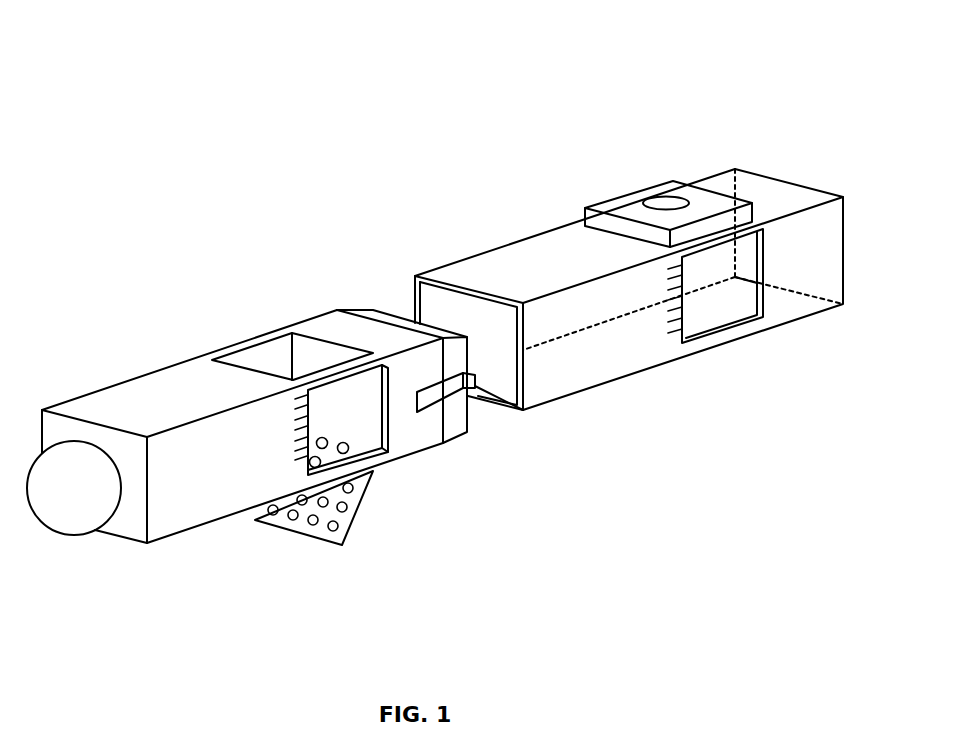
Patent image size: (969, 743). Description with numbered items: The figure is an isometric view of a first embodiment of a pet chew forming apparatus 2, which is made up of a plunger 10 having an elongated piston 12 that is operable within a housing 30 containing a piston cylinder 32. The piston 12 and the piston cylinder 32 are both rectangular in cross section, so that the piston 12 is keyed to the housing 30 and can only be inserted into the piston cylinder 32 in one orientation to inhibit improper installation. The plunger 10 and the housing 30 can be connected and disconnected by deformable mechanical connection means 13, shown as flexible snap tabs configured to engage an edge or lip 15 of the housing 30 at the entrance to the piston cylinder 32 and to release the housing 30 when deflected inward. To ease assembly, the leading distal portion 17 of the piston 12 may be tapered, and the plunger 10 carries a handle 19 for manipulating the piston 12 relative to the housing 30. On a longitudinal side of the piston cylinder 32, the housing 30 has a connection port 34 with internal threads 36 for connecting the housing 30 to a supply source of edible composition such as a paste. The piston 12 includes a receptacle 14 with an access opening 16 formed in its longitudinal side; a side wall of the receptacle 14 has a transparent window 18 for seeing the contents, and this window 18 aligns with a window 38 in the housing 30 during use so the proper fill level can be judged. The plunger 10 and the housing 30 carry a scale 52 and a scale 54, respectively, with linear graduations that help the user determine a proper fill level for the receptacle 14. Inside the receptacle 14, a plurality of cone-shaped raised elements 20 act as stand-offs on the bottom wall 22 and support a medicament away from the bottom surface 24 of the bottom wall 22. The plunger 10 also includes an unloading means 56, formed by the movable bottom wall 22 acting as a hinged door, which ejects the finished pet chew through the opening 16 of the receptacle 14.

The pet chew forming apparatus 2 is at (340, 117).
The plunger 10 is at (128, 288).
The piston 12 is at (128, 378).
The deformable mechanical connection means 13 is at (508, 405).
The receptacle 14 is at (278, 312).
The lip 15 is at (435, 285).
The access opening 16 is at (252, 360).
The leading distal portion 17 is at (372, 310).
The window 18 is at (350, 418).
The handle 19 is at (60, 500).
The raised elements 20 is at (336, 531).
The bottom wall 22 is at (362, 502).
The bottom surface 24 is at (317, 524).
The housing 30 is at (795, 127).
The piston cylinder 32 is at (461, 374).
The connection port 34 is at (627, 208).
The internal threads 36 is at (667, 203).
The window 38 is at (725, 304).
The scale 52 is at (278, 443).
The scale 54 is at (657, 332).
The unloading means 56 is at (277, 548).